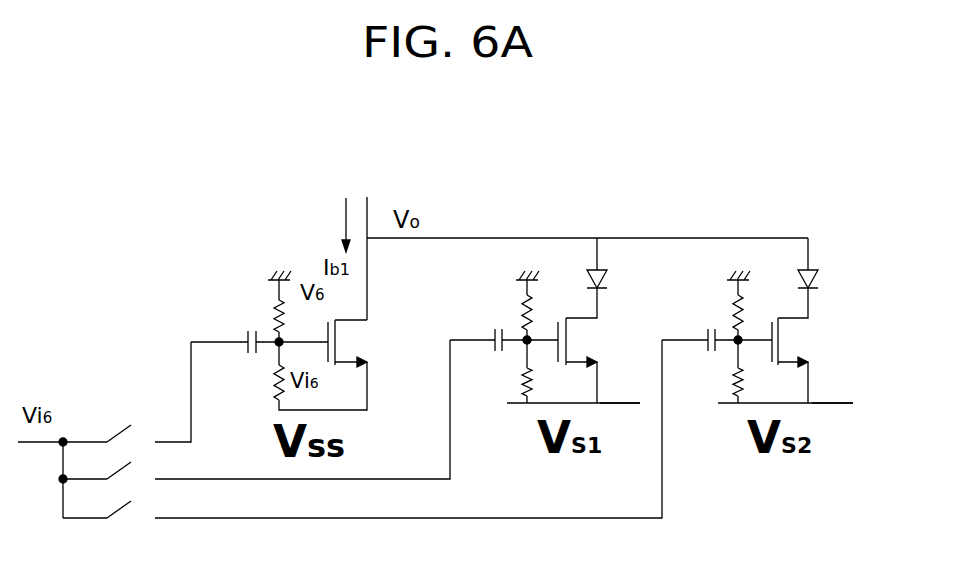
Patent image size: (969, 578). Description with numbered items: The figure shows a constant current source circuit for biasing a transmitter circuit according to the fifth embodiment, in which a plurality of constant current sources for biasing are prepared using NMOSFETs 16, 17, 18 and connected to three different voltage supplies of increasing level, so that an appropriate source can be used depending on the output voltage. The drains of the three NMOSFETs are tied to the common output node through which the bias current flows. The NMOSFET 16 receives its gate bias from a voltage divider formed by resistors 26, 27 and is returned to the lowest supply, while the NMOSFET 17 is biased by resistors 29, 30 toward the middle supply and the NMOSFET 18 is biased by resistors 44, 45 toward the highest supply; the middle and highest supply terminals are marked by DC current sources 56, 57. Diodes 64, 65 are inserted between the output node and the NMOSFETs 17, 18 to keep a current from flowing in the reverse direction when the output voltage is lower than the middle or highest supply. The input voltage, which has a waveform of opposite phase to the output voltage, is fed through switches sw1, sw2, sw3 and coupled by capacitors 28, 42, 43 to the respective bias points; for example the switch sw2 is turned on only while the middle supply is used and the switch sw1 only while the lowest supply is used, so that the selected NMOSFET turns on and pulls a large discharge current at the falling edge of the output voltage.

The NMOSFET 16 is at (352, 341).
The NMOSFET 17 is at (583, 340).
The NMOSFET 18 is at (802, 340).
The resistor 26 is at (272, 322).
The resistor 27 is at (277, 383).
The capacitor 28 is at (247, 350).
The resistor 29 is at (522, 317).
The resistor 30 is at (520, 385).
The capacitor 42 is at (495, 350).
The capacitor 43 is at (705, 348).
The resistor 44 is at (735, 320).
The resistor 45 is at (732, 385).
The DC current source 56 is at (623, 407).
The DC current source 57 is at (835, 407).
The diode 64 is at (610, 280).
The diode 65 is at (820, 280).
The switch sw1 is at (128, 438).
The switch sw2 is at (128, 475).
The switch sw3 is at (128, 513).